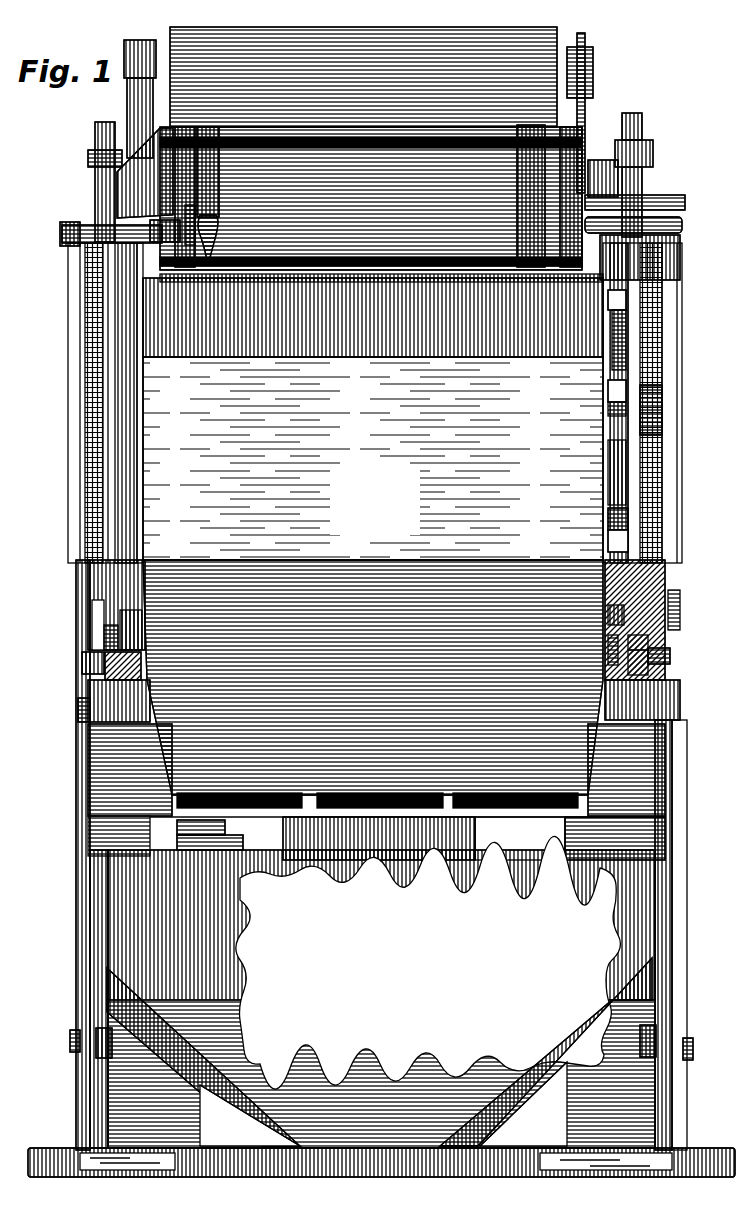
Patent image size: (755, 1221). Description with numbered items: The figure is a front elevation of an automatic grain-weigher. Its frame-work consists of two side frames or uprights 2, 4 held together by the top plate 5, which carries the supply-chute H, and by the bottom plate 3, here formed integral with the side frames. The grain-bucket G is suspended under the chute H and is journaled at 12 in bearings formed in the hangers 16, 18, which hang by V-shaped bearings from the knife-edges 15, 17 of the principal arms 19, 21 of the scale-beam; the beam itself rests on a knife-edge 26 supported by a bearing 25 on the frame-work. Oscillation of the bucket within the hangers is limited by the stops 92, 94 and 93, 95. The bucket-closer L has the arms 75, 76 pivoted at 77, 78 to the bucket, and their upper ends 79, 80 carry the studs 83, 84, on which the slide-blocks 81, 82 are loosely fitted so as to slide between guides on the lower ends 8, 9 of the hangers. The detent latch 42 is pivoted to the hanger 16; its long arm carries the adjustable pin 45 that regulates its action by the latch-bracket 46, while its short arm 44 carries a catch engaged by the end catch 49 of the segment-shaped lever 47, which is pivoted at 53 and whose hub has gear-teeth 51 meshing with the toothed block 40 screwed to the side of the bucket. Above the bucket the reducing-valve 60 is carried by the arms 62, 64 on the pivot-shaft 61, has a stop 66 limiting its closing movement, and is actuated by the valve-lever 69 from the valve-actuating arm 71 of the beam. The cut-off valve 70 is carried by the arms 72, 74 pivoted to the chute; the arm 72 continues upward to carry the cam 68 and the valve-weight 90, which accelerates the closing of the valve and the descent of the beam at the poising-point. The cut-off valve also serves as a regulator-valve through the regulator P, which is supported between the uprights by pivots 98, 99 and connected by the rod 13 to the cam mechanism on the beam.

The supply-chute H is at (340, 27).
The reducing-valve 60 is at (385, 238).
The pivot-shaft 61 is at (375, 127).
The valve arm 62 is at (525, 195).
The valve arm 64 is at (220, 190).
The stop 66 is at (218, 212).
The knife-edge 26 is at (186, 218).
The bearing 25 is at (155, 226).
The cut-off valve 70 is at (398, 282).
The grain-bucket G is at (373, 458).
The knife-edge 17 is at (95, 177).
The principal arm 21 is at (117, 196).
The valve-lever 69 is at (124, 50).
The valve-actuating arm 71 is at (127, 103).
The valve arm 74 is at (128, 250).
The hanger 18 is at (85, 476).
The side frame 4 is at (84, 822).
The journal 12 is at (90, 566).
The lower end of hanger 9 is at (92, 622).
The slide-block 82 is at (92, 645).
The stop 94 is at (146, 628).
The stop 95 is at (123, 666).
The stud 84 is at (82, 660).
The upper end of closer-arm 80 is at (92, 686).
The pivot 78 is at (78, 710).
The closer-arm 76 is at (125, 756).
The valve-weight 90 is at (583, 60).
The valve arm 72 is at (585, 120).
The cam 68 is at (653, 152).
The knife-edge 15 is at (640, 170).
The principal arm 19 is at (645, 194).
The top plate 5 is at (682, 224).
The hanger 16 is at (640, 454).
The adjustable pin 45 is at (612, 302).
The lever 47 is at (622, 335).
The block 40 is at (612, 388).
The pivot 53 is at (654, 405).
The gear-teeth 51 is at (610, 412).
The end catch 49 is at (610, 506).
The short arm 44 is at (610, 526).
The detent latch 42 is at (608, 548).
The latch-bracket 46 is at (665, 598).
The stop 92 is at (610, 618).
The lower end of hanger 8 is at (689, 610).
The stop 93 is at (612, 650).
The slide-block 81 is at (656, 645).
The stud 83 is at (670, 657).
The upper end of closer-arm 79 is at (665, 670).
The pivot 77 is at (675, 702).
The closer-arm 75 is at (665, 754).
The rod 13 is at (656, 792).
The side frame 2 is at (670, 824).
The bucket-closer L is at (520, 838).
The regulator P is at (635, 905).
The pivot 99 is at (70, 1040).
The pivot 98 is at (694, 1050).
The bottom plate 3 is at (512, 1162).